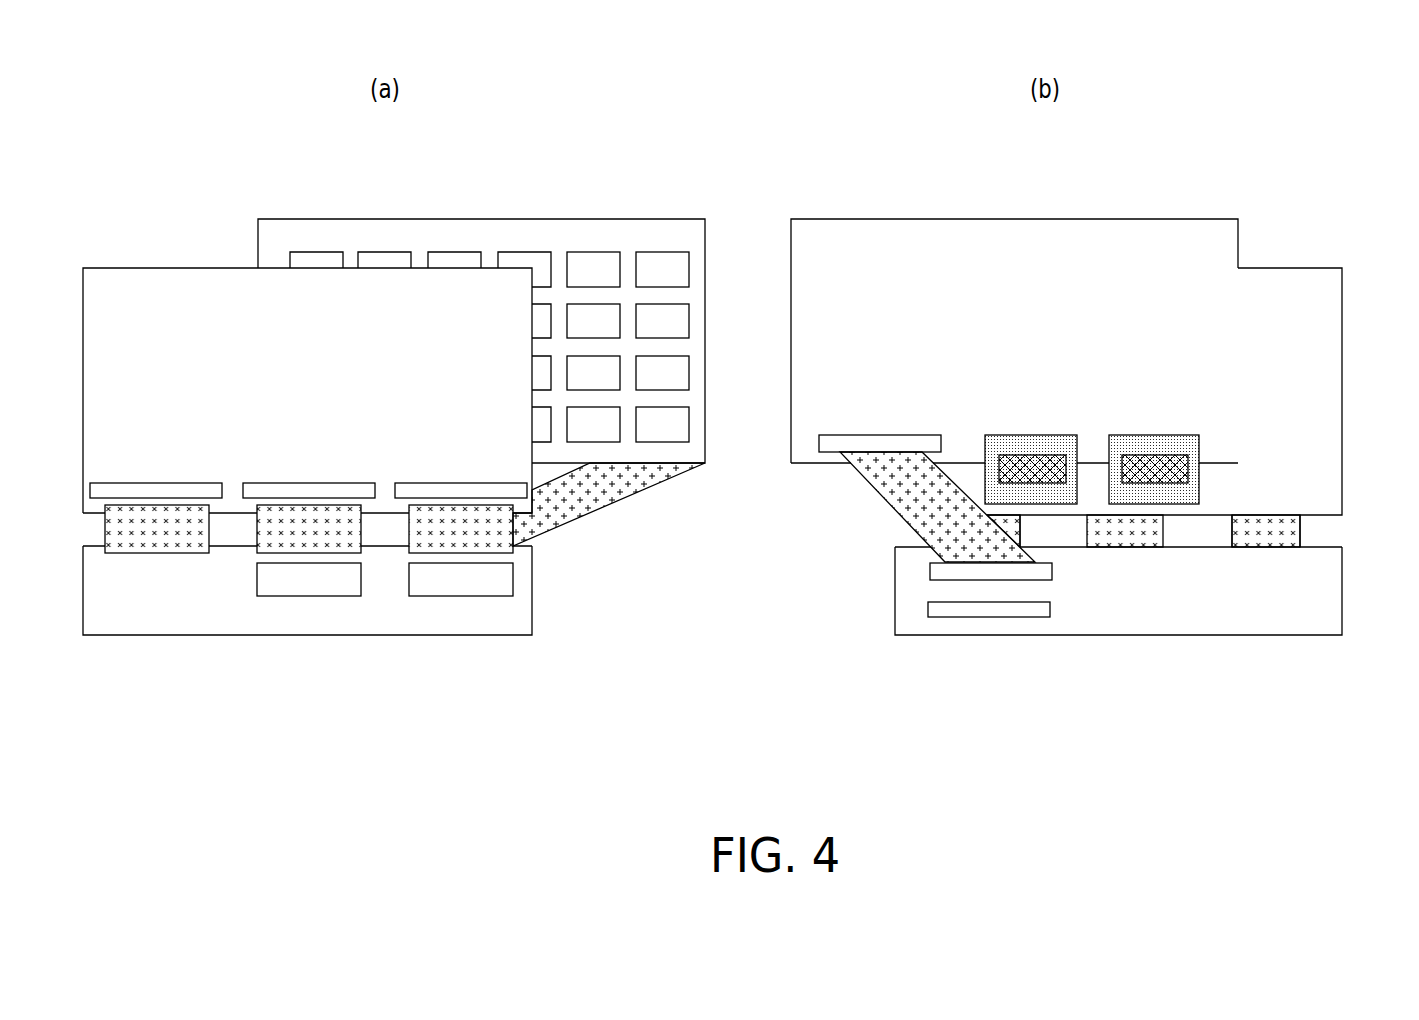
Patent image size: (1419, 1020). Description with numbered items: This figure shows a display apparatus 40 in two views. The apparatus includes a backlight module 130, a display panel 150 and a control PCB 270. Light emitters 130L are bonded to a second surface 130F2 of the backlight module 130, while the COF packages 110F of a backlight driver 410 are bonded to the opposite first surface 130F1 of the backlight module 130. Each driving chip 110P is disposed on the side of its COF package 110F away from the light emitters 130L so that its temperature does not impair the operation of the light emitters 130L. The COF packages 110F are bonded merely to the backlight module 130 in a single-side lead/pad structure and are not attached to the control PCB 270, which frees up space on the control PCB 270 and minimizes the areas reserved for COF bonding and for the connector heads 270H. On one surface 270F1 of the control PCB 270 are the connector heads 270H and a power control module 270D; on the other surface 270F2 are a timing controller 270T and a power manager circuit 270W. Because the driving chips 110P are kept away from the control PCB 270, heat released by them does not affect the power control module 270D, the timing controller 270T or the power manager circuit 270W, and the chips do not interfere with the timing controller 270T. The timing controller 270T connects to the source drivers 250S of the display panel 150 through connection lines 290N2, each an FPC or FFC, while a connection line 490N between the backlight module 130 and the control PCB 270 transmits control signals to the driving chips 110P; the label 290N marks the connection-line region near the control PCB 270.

The display apparatus 40 is at (152, 116).
The backlight module 130 is at (867, 155).
The second surface of the backlight module 130F2 is at (668, 226).
The first surface of the backlight module 130F1 is at (846, 226).
The light emitters 130L is at (312, 258).
The display panel 150 is at (140, 276).
The source drivers 250S is at (155, 490).
The connection lines 290N2 is at (152, 553).
The conductive nodes 290N is at (1300, 533).
The connection line 490N is at (597, 492).
The control PCB 270 is at (855, 712).
The surface of the control PCB 270F2 is at (523, 608).
The surface of the control PCB 270F1 is at (907, 610).
The timing controller 270T is at (275, 597).
The power manager circuit 270W is at (425, 591).
The connector heads 270H is at (1010, 574).
The power control module 270D is at (945, 610).
The backlight driver 410 is at (1190, 372).
The driving chip 110P is at (1030, 453).
The COF package 110F is at (1190, 495).